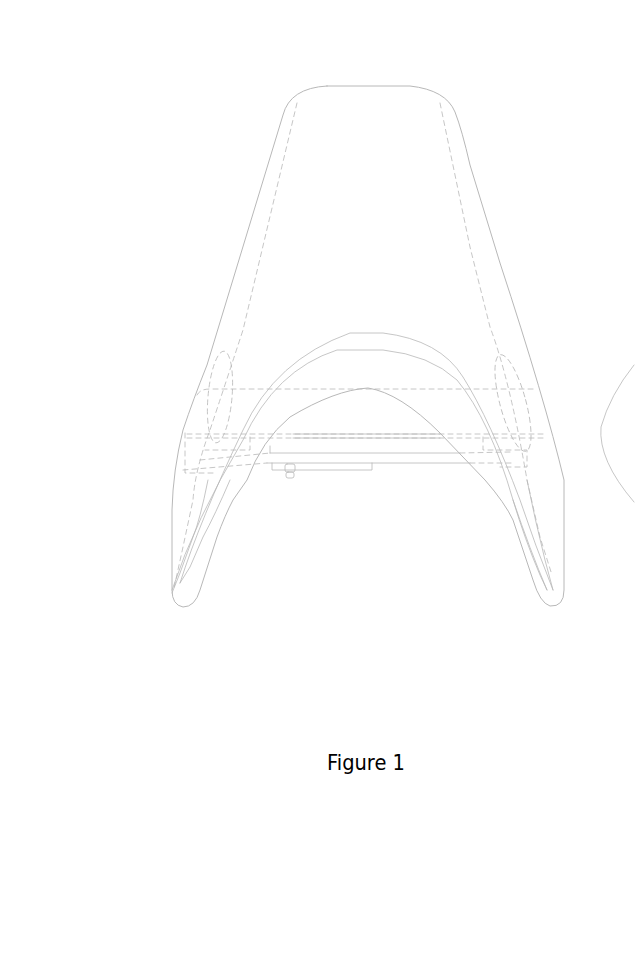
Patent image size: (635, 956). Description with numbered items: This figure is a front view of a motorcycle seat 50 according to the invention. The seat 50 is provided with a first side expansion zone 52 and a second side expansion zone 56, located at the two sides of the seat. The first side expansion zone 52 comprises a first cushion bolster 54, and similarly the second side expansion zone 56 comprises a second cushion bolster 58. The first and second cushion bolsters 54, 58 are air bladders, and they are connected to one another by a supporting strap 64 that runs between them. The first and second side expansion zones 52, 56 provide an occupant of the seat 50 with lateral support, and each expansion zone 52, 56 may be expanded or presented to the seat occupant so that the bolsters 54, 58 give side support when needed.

The motorcycle seat 50 is at (537, 99).
The first side expansion zone 52 is at (560, 389).
The first cushion bolster 54 is at (562, 543).
The second side expansion zone 56 is at (173, 360).
The second cushion bolster 58 is at (175, 528).
The supporting strap 64 is at (500, 405).